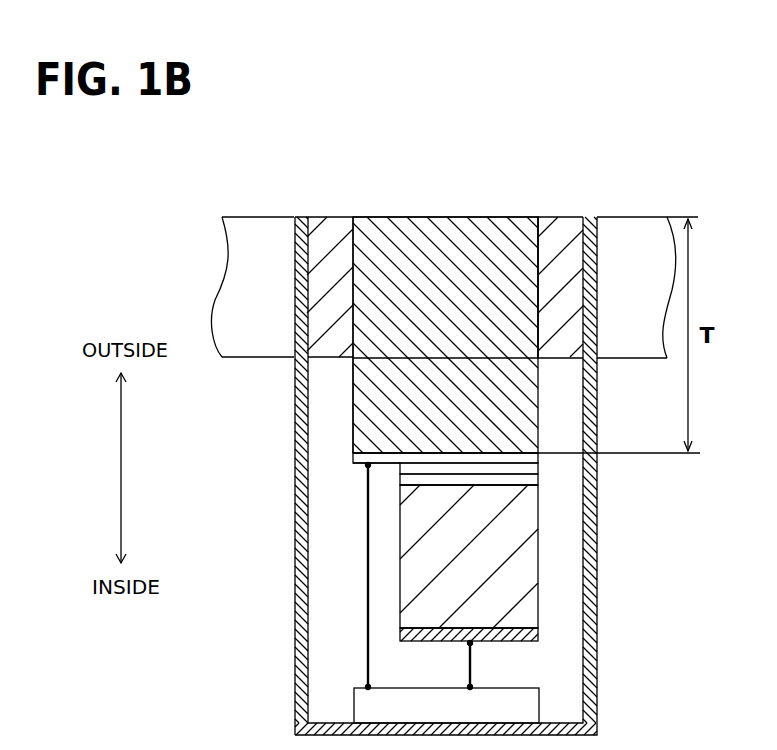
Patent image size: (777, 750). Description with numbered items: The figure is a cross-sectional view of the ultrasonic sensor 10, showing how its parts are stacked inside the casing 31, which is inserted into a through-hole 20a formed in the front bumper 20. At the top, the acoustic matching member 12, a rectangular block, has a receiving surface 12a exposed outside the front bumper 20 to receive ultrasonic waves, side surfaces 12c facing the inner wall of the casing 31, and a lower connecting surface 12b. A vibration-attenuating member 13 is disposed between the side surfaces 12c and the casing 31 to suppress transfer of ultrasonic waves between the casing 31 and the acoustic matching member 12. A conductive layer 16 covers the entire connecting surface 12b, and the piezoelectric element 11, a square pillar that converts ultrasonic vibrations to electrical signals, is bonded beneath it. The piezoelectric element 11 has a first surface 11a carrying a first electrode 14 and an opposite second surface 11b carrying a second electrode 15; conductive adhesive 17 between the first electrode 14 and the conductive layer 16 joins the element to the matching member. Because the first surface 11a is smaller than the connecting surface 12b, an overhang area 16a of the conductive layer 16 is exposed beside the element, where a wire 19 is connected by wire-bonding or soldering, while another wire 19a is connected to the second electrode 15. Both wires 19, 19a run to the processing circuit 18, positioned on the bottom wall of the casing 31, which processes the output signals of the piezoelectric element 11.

The ultrasonic sensor 10 is at (648, 181).
The piezoelectric element 11 is at (538, 578).
The first surface 11a is at (497, 488).
The second surface 11b is at (502, 628).
The acoustic matching member 12 is at (538, 408).
The receiving surface 12a is at (462, 218).
The connecting surface 12b is at (353, 457).
The side surfaces 12c is at (543, 250).
The vibration-attenuating member 13 is at (333, 222).
The first electrode 14 is at (538, 478).
The second electrode 15 is at (538, 633).
The conductive layer 16 is at (538, 458).
The overhang area 16a is at (383, 465).
The conductive adhesive 17 is at (538, 468).
The processing circuit 18 is at (363, 702).
The wire 19 is at (368, 572).
The wire 19a is at (470, 662).
The front bumper 20 is at (274, 217).
The through-hole 20a is at (294, 315).
The casing 31 is at (597, 690).